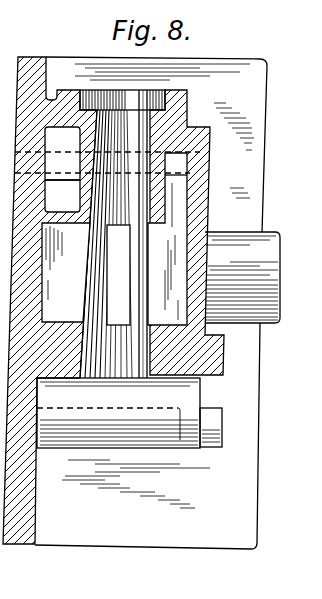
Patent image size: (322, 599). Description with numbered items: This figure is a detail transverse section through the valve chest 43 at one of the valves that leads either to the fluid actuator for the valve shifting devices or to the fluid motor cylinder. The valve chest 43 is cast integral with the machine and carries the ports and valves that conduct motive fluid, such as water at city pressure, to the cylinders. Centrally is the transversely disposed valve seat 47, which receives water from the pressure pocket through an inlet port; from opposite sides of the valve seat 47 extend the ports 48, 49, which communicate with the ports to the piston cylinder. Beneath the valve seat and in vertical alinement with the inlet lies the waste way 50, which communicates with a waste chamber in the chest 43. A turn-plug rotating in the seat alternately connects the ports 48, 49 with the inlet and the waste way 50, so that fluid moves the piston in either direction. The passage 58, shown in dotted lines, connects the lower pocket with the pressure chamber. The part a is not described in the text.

The valve chest 43 is at (203, 170).
The valve seat 47 is at (122, 234).
The port 48 is at (66, 272).
The port 49 is at (272, 211).
The waste way 50 is at (118, 275).
The passage 58 is at (62, 195).
The cylinder a is at (200, 449).